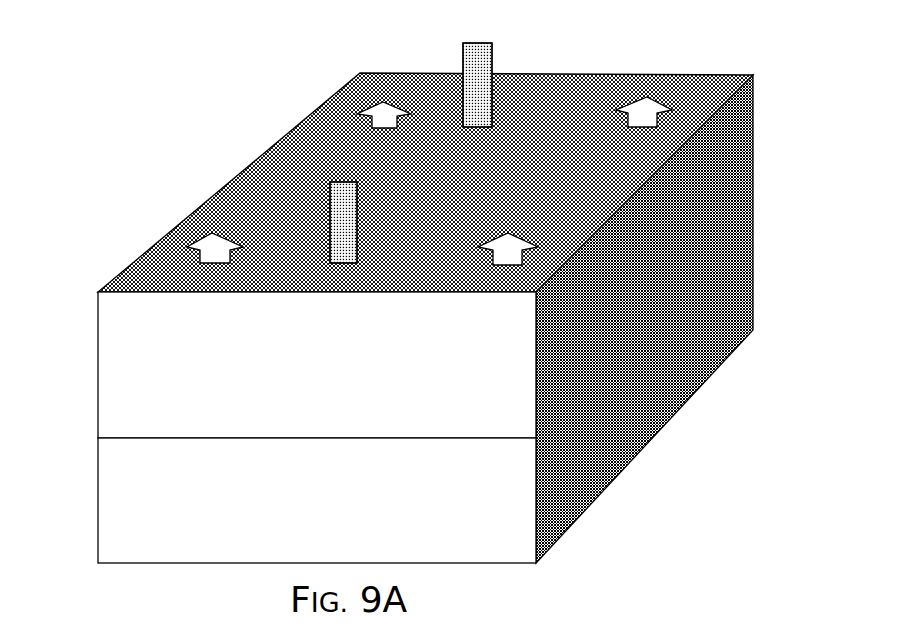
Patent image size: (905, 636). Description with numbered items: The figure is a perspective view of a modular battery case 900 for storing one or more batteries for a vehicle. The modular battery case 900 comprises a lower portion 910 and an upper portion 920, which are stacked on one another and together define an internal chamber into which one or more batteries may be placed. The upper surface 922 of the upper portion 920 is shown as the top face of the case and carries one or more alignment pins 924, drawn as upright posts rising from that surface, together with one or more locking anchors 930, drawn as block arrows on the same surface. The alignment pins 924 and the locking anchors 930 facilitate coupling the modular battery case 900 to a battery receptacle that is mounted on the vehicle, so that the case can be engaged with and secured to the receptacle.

The modular battery case 900 is at (196, 120).
The lower portion 910 is at (98, 490).
The upper portion 920 is at (98, 365).
The upper surface 922 is at (537, 80).
The alignment pins 924 is at (477, 43).
The locking anchors 930 is at (214, 236).